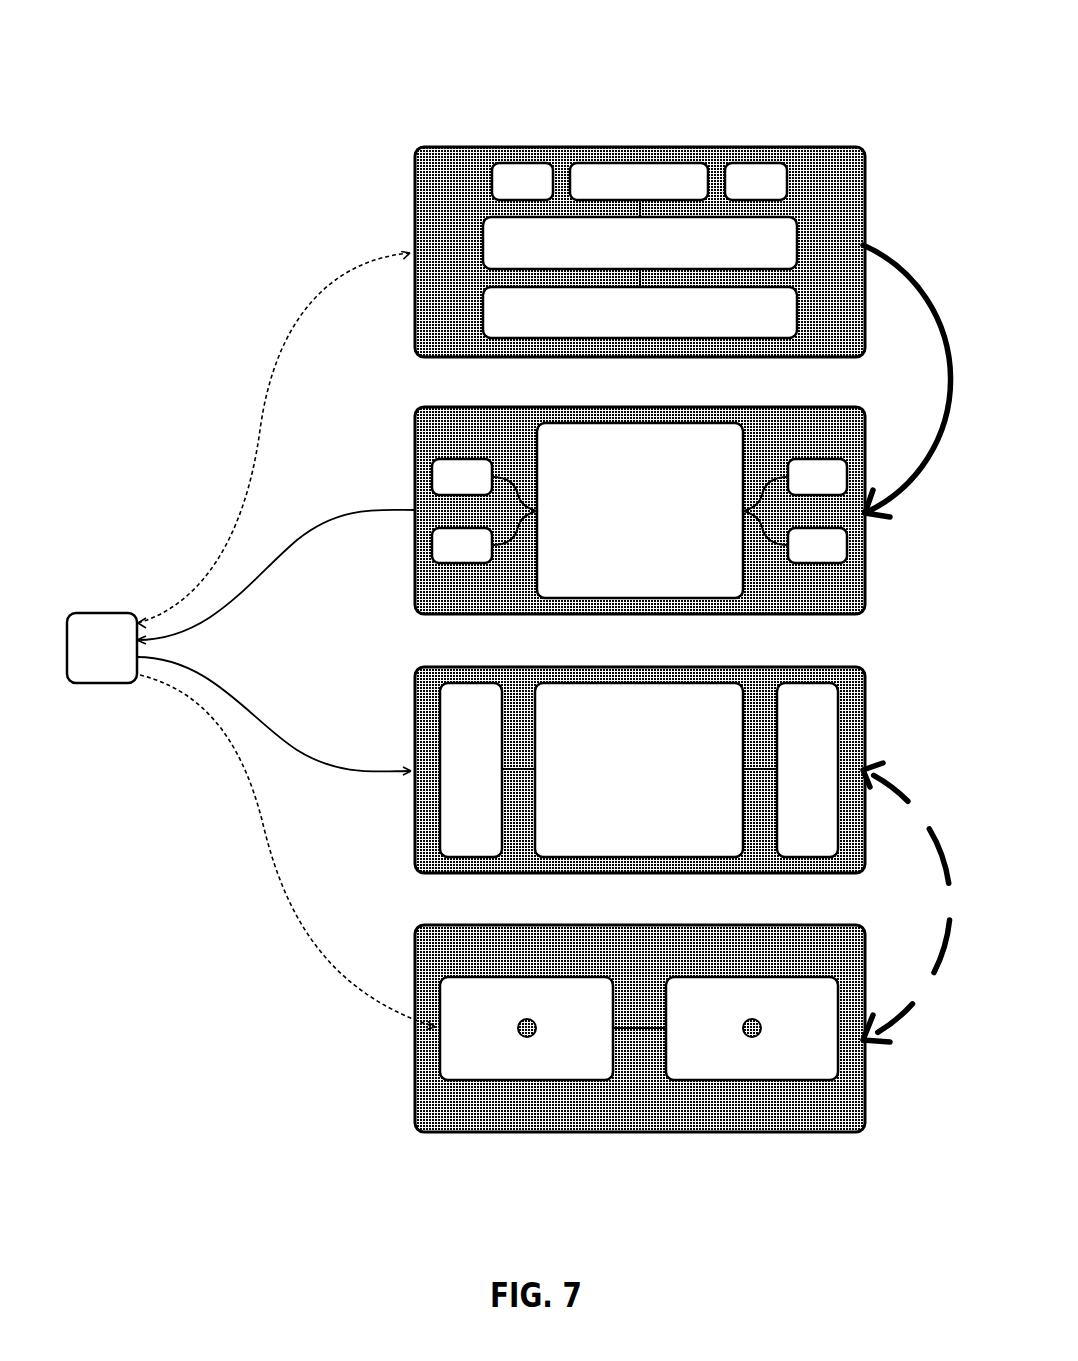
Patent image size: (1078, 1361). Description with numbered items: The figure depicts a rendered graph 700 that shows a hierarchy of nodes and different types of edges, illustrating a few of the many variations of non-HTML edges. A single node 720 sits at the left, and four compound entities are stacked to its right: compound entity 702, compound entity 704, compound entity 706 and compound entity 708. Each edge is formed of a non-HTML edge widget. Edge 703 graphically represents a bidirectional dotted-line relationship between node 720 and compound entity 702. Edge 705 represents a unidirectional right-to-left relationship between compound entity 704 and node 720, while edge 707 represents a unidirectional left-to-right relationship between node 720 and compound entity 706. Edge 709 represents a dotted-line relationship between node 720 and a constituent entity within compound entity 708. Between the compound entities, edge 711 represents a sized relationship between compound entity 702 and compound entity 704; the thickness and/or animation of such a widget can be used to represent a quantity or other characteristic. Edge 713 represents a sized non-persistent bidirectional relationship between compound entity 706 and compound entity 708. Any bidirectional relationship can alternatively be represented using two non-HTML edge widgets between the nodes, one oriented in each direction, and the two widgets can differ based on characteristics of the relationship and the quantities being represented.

The rendered graph 700 is at (88, 53).
The compound entity 702 is at (463, 145).
The edge 703 is at (293, 327).
The compound entity 704 is at (463, 405).
The edge 705 is at (293, 550).
The compound entity 706 is at (463, 665).
The edge 707 is at (293, 740).
The compound entity 708 is at (463, 923).
The edge 709 is at (293, 930).
The edge 711 is at (892, 503).
The edge 713 is at (895, 1027).
The node 720 is at (105, 613).